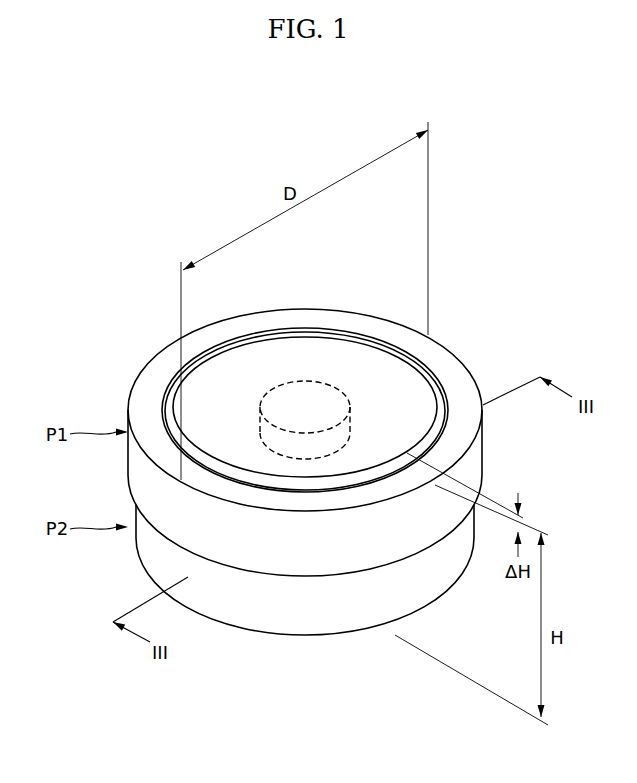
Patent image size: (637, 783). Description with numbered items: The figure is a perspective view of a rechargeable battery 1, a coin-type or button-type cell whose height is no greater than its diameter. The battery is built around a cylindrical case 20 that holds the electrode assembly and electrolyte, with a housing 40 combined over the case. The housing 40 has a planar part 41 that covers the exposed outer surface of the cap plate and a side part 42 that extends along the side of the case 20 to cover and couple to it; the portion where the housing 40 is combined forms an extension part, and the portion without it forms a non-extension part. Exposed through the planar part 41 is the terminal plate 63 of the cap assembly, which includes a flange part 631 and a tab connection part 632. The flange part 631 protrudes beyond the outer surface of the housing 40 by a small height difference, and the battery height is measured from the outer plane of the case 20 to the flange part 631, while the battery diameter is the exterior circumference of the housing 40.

The rechargeable battery 1 is at (293, 128).
The case 20 is at (298, 628).
The housing 40 is at (345, 442).
The planar part 41 is at (467, 428).
The side part 42 is at (529, 425).
The terminal plate 63 is at (305, 353).
The flange part 631 is at (359, 350).
The tab connection part 632 is at (303, 386).